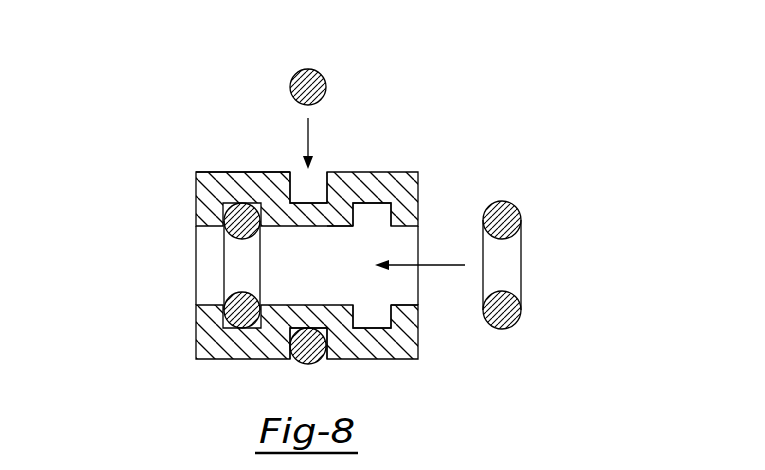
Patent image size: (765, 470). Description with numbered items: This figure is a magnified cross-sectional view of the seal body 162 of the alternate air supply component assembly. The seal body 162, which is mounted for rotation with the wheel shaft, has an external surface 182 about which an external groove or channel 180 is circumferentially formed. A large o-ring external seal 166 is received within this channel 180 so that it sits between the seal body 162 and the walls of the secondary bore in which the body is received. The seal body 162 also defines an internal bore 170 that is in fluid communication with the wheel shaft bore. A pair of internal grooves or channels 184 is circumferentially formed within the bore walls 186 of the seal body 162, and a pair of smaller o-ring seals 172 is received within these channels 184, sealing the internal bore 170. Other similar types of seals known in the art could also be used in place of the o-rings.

The seal body 162 is at (204, 337).
The external seal 166 is at (318, 71).
The internal bore 170 is at (402, 291).
The seals 172 is at (247, 284).
The external groove or channel 180 is at (315, 192).
The external surface 182 is at (235, 171).
The internal grooves or channels 184 is at (377, 204).
The bore walls 186 is at (326, 227).